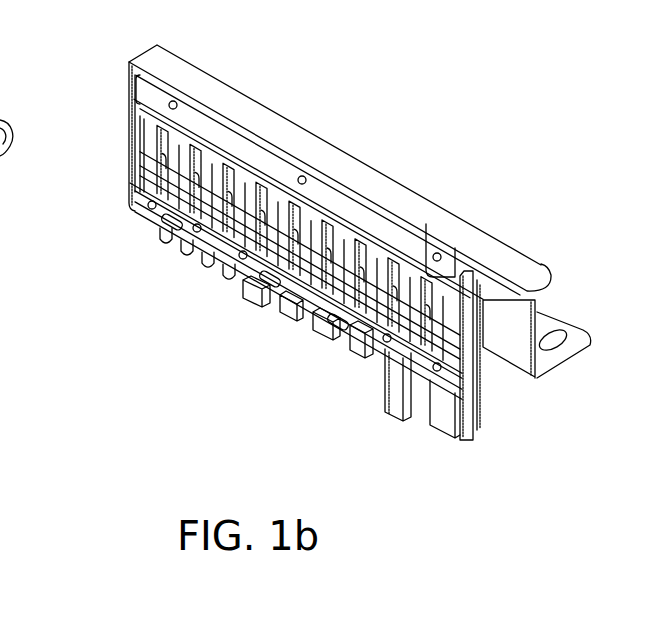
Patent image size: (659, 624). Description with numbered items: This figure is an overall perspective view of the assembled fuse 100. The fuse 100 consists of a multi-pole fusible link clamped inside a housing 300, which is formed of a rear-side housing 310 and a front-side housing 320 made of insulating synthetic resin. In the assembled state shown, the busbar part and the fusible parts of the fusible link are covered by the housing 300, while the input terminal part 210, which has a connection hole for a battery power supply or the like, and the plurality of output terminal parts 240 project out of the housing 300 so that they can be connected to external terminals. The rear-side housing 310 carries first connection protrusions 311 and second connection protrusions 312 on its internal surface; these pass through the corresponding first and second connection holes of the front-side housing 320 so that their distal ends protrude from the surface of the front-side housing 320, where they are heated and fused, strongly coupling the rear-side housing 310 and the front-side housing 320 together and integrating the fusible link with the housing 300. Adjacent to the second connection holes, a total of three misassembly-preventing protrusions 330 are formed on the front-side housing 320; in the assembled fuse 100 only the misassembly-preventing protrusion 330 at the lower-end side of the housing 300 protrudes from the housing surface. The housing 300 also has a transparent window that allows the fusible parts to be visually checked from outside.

The fuse 100 is at (535, 182).
The input terminal part 210 is at (573, 337).
The output terminal parts 240 is at (253, 295).
The housing 300 is at (60, 43).
The rear-side housing 310 is at (188, 57).
The first connection protrusions 311 is at (173, 102).
The second connection protrusions 312 is at (140, 220).
The front-side housing 320 is at (150, 87).
The misassembly-preventing protrusions 330 is at (165, 229).